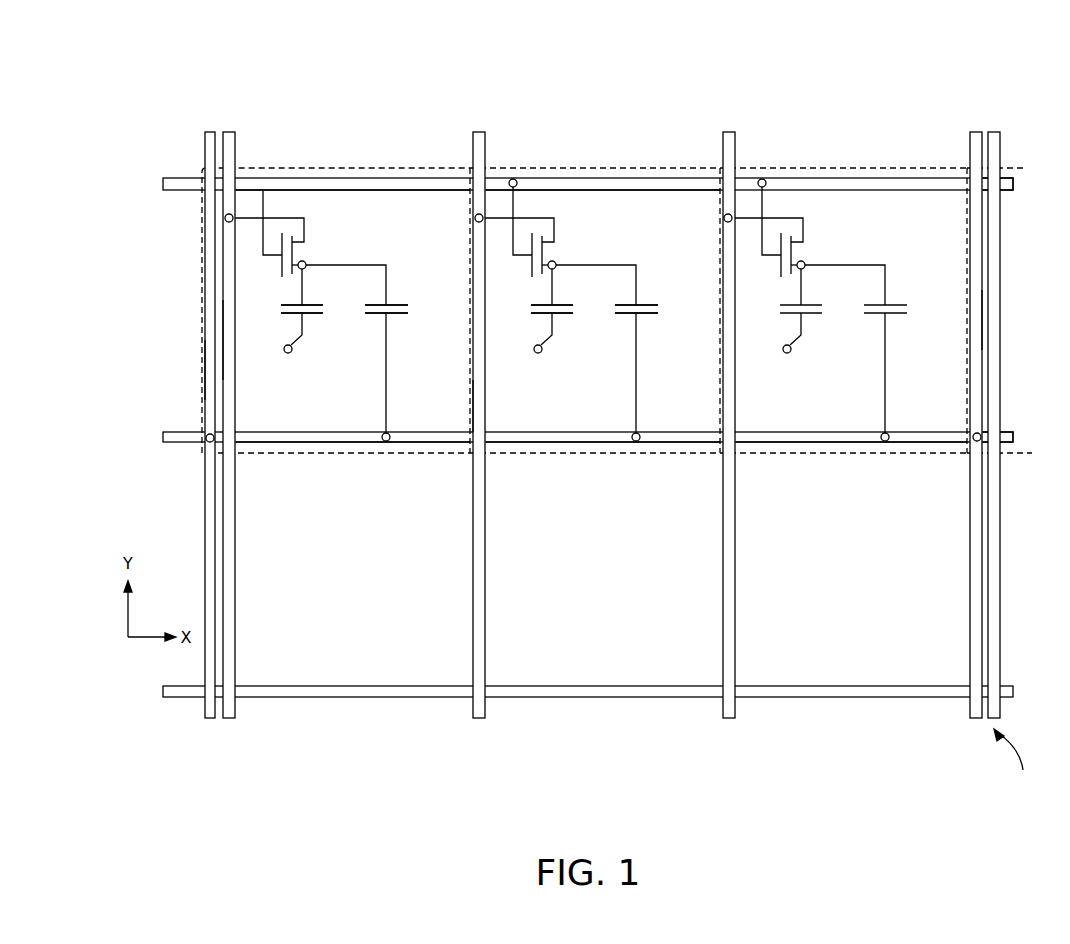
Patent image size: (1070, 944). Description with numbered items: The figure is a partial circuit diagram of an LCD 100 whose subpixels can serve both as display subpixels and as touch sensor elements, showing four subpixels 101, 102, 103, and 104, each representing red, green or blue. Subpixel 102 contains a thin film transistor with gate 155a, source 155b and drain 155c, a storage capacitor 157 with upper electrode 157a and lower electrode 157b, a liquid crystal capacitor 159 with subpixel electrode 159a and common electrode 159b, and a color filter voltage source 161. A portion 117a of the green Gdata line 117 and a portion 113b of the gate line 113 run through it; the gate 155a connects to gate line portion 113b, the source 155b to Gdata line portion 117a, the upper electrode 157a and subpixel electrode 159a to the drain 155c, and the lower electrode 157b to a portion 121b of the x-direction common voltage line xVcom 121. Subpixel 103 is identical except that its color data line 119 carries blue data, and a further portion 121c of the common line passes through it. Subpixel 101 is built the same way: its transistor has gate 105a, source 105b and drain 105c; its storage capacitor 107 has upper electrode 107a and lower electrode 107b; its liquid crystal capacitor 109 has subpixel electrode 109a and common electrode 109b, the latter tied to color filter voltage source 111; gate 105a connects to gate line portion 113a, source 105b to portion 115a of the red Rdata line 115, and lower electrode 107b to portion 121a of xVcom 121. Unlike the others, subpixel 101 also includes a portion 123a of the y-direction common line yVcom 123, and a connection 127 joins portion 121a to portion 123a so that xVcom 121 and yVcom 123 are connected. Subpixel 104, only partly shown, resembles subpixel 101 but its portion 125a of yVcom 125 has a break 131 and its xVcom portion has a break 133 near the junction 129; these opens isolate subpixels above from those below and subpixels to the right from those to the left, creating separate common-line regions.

The LCD 100 is at (597, 434).
The subpixel 101 is at (388, 165).
The subpixel 102 is at (637, 165).
The subpixel 103 is at (840, 165).
The subpixel 104 is at (1010, 165).
The gate 105a is at (281, 258).
The source 105b is at (295, 243).
The drain 105c is at (305, 263).
The storage capacitor 107 is at (443, 251).
The upper electrode 107a is at (397, 304).
The lower electrode 107b is at (397, 317).
The liquid crystal capacitor 109 is at (251, 353).
The subpixel electrode 109a is at (312, 304).
The common electrode 109b is at (313, 317).
The color filter voltage source 111 is at (300, 411).
The gate line 113 is at (184, 178).
The portion of gate line 113a is at (314, 178).
The portion of gate line 113b is at (565, 178).
The Rdata line 115 is at (233, 733).
The portion of Rdata line 115a is at (223, 337).
The Gdata line 117 is at (483, 733).
The portion of Gdata line 117a is at (472, 410).
The color data line 119 is at (733, 733).
The xVcom 121 is at (183, 432).
The portion of xVcom 121a is at (336, 443).
The portion of xVcom 121b is at (586, 443).
The third portion of second gate line 121c is at (836, 443).
The yVcom 123 is at (207, 733).
The portion of yVcom 123a is at (203, 370).
The yVcom 125 is at (972, 733).
The portion of yVcom 125a is at (983, 318).
The connection 127 is at (207, 444).
The contact between gate line and common voltage line 129 is at (975, 446).
The break 131 is at (978, 191).
The break 133 is at (988, 434).
The gate 155a is at (531, 258).
The source 155b is at (545, 243).
The drain 155c is at (555, 263).
The storage capacitor 157 is at (693, 251).
The upper electrode 157a is at (647, 304).
The lower electrode 157b is at (647, 317).
The liquid crystal capacitor 159 is at (501, 353).
The subpixel electrode 159a is at (562, 304).
The common electrode 159b is at (563, 317).
The color filter voltage source 161 is at (526, 411).